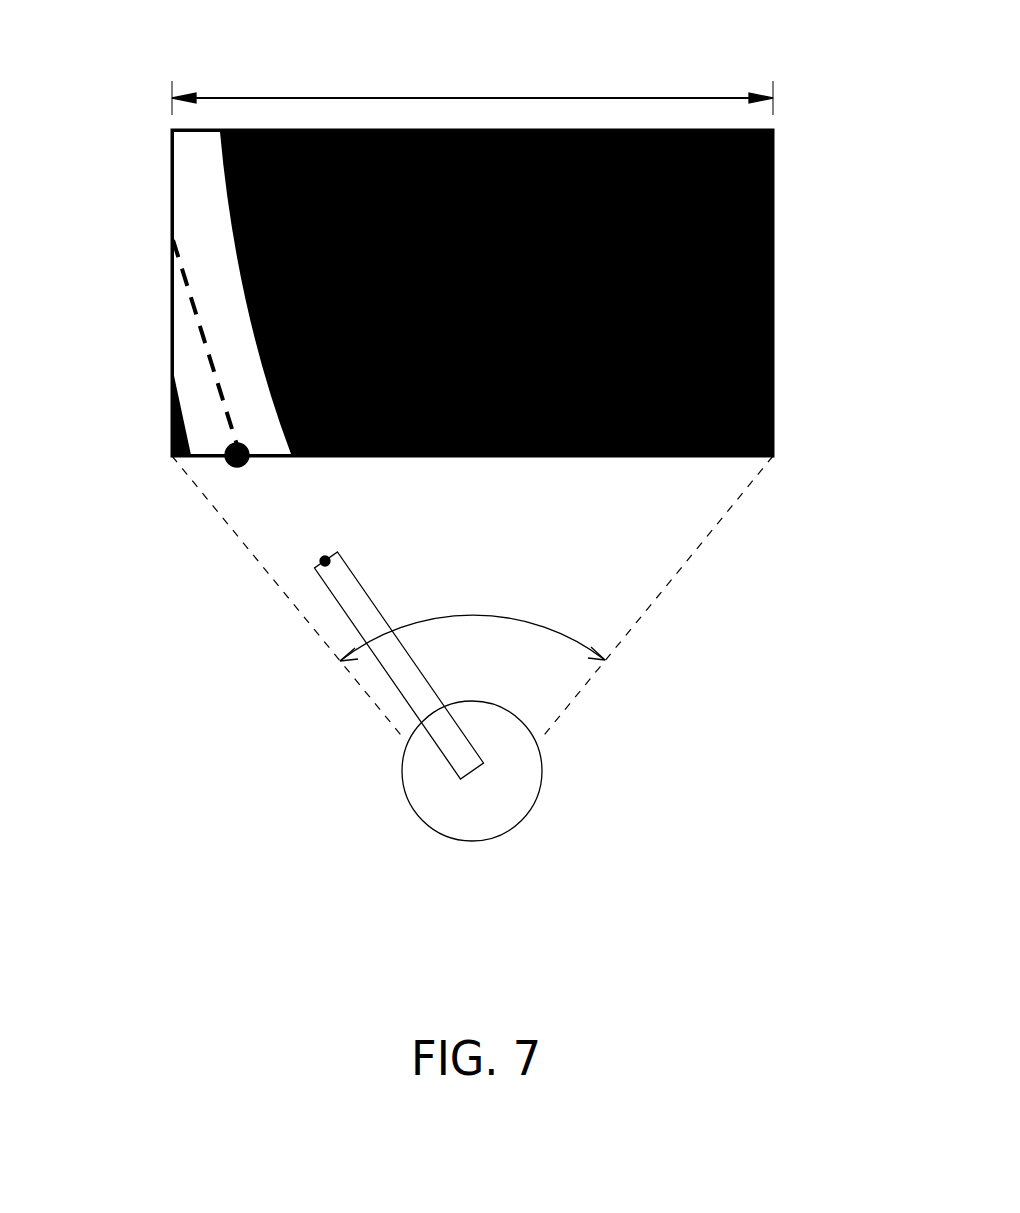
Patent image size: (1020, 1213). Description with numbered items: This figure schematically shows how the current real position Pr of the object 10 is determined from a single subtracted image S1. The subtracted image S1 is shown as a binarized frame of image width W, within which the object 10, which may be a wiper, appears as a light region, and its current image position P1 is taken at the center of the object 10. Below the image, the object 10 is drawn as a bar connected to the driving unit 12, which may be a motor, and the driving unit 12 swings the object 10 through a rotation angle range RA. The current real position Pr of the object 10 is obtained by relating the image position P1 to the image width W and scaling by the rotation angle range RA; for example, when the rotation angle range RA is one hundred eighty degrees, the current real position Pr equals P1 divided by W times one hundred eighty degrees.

The object 10 is at (187, 187).
The driving unit 12 is at (534, 763).
The current image position P1 is at (243, 475).
The current real position Pr is at (317, 547).
The subtracted image S1 is at (652, 63).
The image width W is at (472, 91).
The rotation angle range RA is at (472, 621).